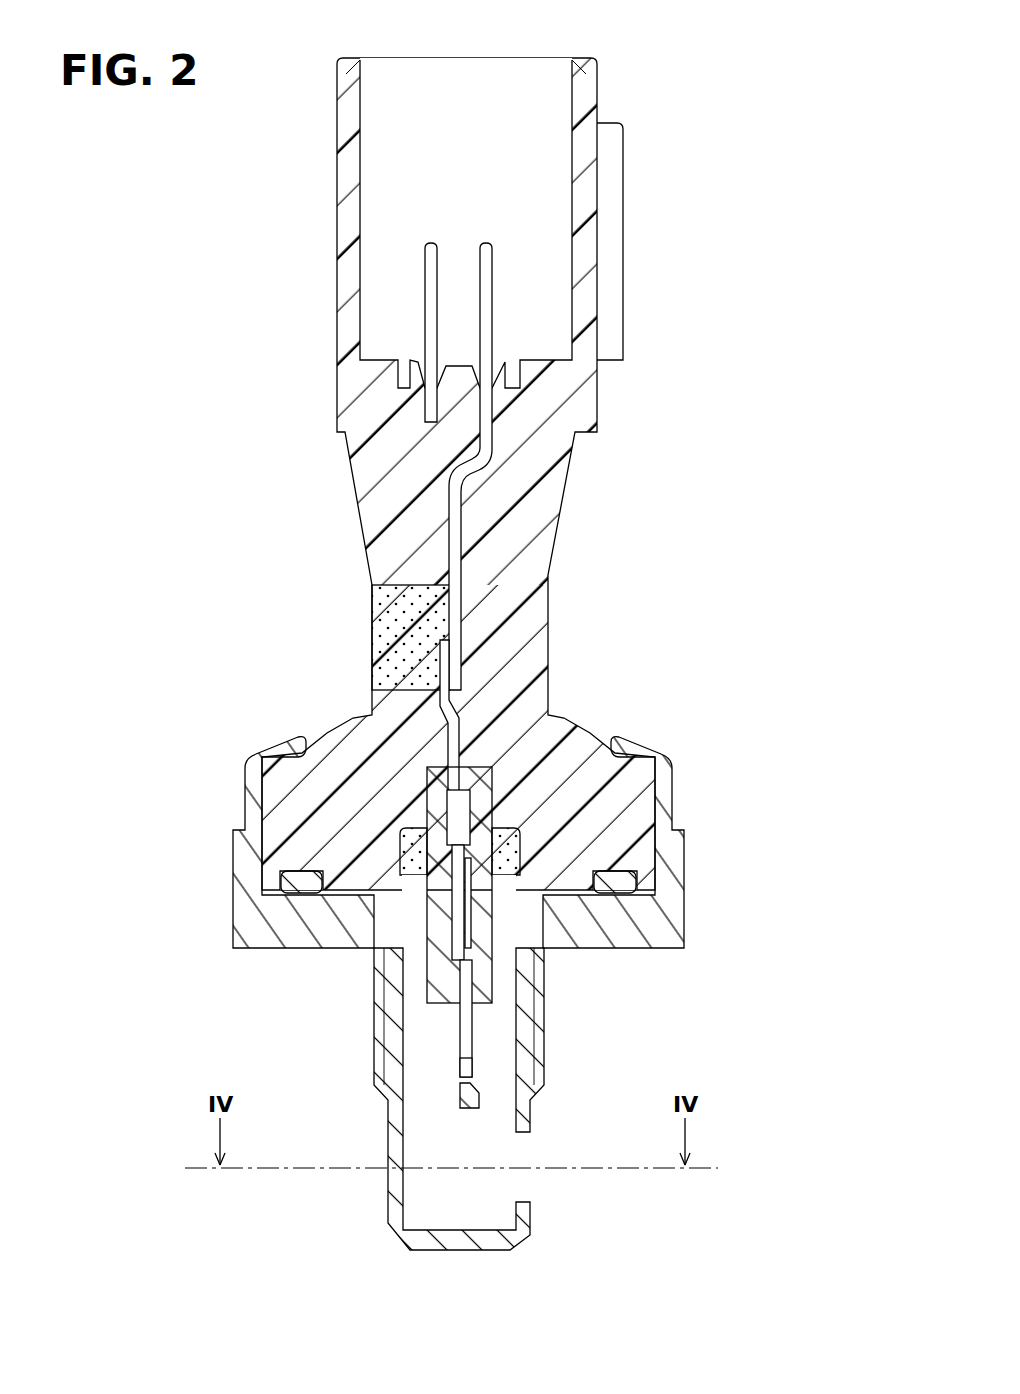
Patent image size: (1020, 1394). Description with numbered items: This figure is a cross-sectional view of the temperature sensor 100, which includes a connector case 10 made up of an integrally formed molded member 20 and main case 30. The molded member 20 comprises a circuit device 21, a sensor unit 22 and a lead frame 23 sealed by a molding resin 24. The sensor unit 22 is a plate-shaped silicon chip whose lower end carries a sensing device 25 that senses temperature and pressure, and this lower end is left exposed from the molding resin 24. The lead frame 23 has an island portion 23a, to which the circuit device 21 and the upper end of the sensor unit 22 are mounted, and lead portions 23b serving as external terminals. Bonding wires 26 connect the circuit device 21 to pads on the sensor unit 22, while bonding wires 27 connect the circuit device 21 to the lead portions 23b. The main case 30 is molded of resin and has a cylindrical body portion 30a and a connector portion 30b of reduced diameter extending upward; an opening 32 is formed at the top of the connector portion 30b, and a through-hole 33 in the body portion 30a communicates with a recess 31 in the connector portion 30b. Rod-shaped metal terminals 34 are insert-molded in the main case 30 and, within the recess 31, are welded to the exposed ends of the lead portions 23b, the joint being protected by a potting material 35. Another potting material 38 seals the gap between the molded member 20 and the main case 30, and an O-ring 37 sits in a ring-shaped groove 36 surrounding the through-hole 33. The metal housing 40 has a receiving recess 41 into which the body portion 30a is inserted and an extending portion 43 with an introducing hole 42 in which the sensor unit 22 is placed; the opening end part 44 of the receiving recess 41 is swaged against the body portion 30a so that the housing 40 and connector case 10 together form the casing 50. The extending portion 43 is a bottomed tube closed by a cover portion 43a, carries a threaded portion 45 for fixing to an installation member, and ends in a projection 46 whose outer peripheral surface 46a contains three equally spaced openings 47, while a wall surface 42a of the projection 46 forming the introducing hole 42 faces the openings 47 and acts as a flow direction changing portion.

The temperature sensor 100 is at (653, 212).
The connector case 10 is at (688, 518).
The molded member 20 is at (470, 790).
The circuit device 21 is at (472, 905).
The sensor unit 22 is at (472, 985).
The lead frame 23 is at (212, 950).
The island portion 23a is at (425, 998).
The lead portions 23b is at (425, 940).
The molding resin 24 is at (484, 810).
The sensing device 25 is at (476, 1063).
The bonding wires 26 is at (474, 962).
The bonding wires 27 is at (478, 868).
The main case 30 is at (525, 470).
The body portion 30a is at (625, 798).
The connector portion 30b is at (375, 462).
The recess 31 is at (410, 600).
The opening 32 is at (558, 96).
The through-hole 33 is at (610, 880).
The terminals 34 is at (488, 280).
The potting material 35 is at (385, 653).
The groove 36 is at (300, 900).
The O-ring 37 is at (300, 882).
The potting material 38 is at (400, 838).
The housing 40 is at (575, 945).
The receiving recess 41 is at (674, 790).
The introducing hole 42 is at (440, 1148).
The wall surface 42a is at (413, 1232).
The extending portion 43 is at (392, 1105).
The cover portion 43a is at (480, 1245).
The opening end part 44 is at (645, 742).
The threaded portion 45 is at (380, 1090).
The projection 46 is at (388, 1195).
The outer peripheral surface 46a is at (388, 1215).
The openings 47 is at (524, 1133).
The casing 50 is at (631, 672).